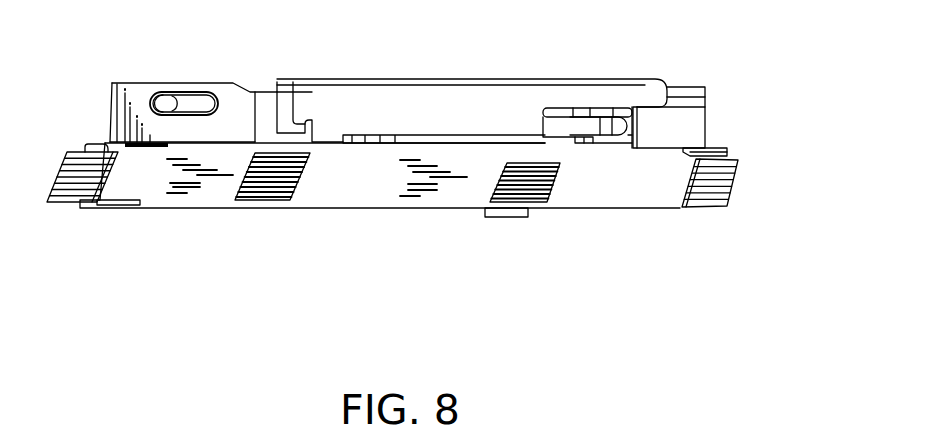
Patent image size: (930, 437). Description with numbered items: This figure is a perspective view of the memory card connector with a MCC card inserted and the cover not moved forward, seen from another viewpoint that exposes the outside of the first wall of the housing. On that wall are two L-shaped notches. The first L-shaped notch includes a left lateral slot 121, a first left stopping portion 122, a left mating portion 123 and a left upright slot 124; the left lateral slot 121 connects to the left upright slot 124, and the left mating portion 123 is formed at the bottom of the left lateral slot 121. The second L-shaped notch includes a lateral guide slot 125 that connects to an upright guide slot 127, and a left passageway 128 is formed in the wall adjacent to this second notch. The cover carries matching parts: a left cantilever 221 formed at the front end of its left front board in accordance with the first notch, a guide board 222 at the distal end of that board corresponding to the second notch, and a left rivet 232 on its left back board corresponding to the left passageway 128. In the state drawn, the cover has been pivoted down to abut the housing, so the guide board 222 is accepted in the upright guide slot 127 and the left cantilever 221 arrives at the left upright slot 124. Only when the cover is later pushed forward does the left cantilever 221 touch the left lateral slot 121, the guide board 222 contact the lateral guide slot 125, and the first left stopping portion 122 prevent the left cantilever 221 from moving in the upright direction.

The left lateral slot 121 is at (668, 118).
The first left stopping portion 122 is at (687, 100).
The left mating portion 123 is at (628, 145).
The left upright slot 124 is at (593, 145).
The lateral guide slot 125 is at (297, 138).
The upright guide slot 127 is at (265, 107).
The left passageway 128 is at (193, 97).
The left cantilever 221 is at (615, 145).
The guide board 222 is at (294, 120).
The left rivet 232 is at (157, 95).